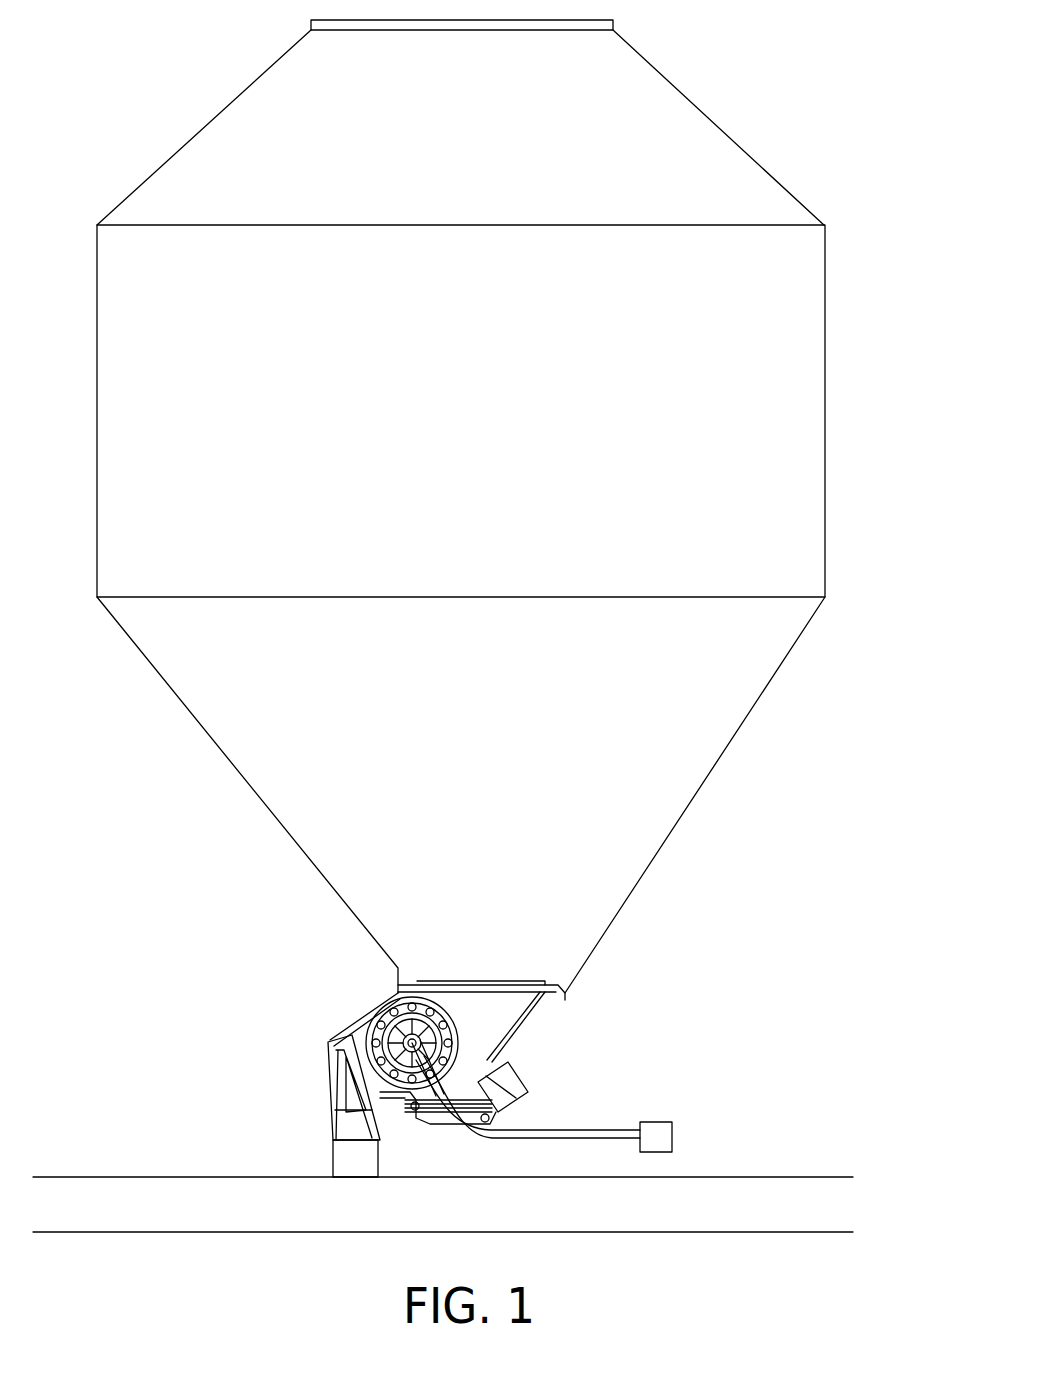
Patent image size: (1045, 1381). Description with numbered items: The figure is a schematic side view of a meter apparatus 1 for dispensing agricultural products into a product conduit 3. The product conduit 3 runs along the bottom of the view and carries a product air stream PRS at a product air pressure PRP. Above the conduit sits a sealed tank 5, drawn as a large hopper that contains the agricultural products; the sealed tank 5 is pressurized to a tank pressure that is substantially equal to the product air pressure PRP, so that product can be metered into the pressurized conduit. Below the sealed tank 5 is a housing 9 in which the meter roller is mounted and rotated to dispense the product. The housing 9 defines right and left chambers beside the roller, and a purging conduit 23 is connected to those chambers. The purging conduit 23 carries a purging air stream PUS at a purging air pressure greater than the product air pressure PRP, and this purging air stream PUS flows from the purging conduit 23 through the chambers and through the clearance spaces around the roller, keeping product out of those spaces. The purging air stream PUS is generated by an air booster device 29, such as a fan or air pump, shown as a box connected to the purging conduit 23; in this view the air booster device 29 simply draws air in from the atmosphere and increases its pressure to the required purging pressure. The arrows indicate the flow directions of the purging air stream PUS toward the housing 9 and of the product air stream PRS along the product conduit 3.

The meter apparatus 1 is at (357, 1006).
The product conduit 3 is at (178, 1177).
The sealed tank 5 is at (826, 288).
The housing 9 is at (520, 1025).
The purging conduit 23 is at (548, 1140).
The air booster device 29 is at (655, 1122).
The purging air stream PUS is at (515, 1122).
The product air pressure PRP is at (779, 493).
The product air stream PRS is at (563, 1206).